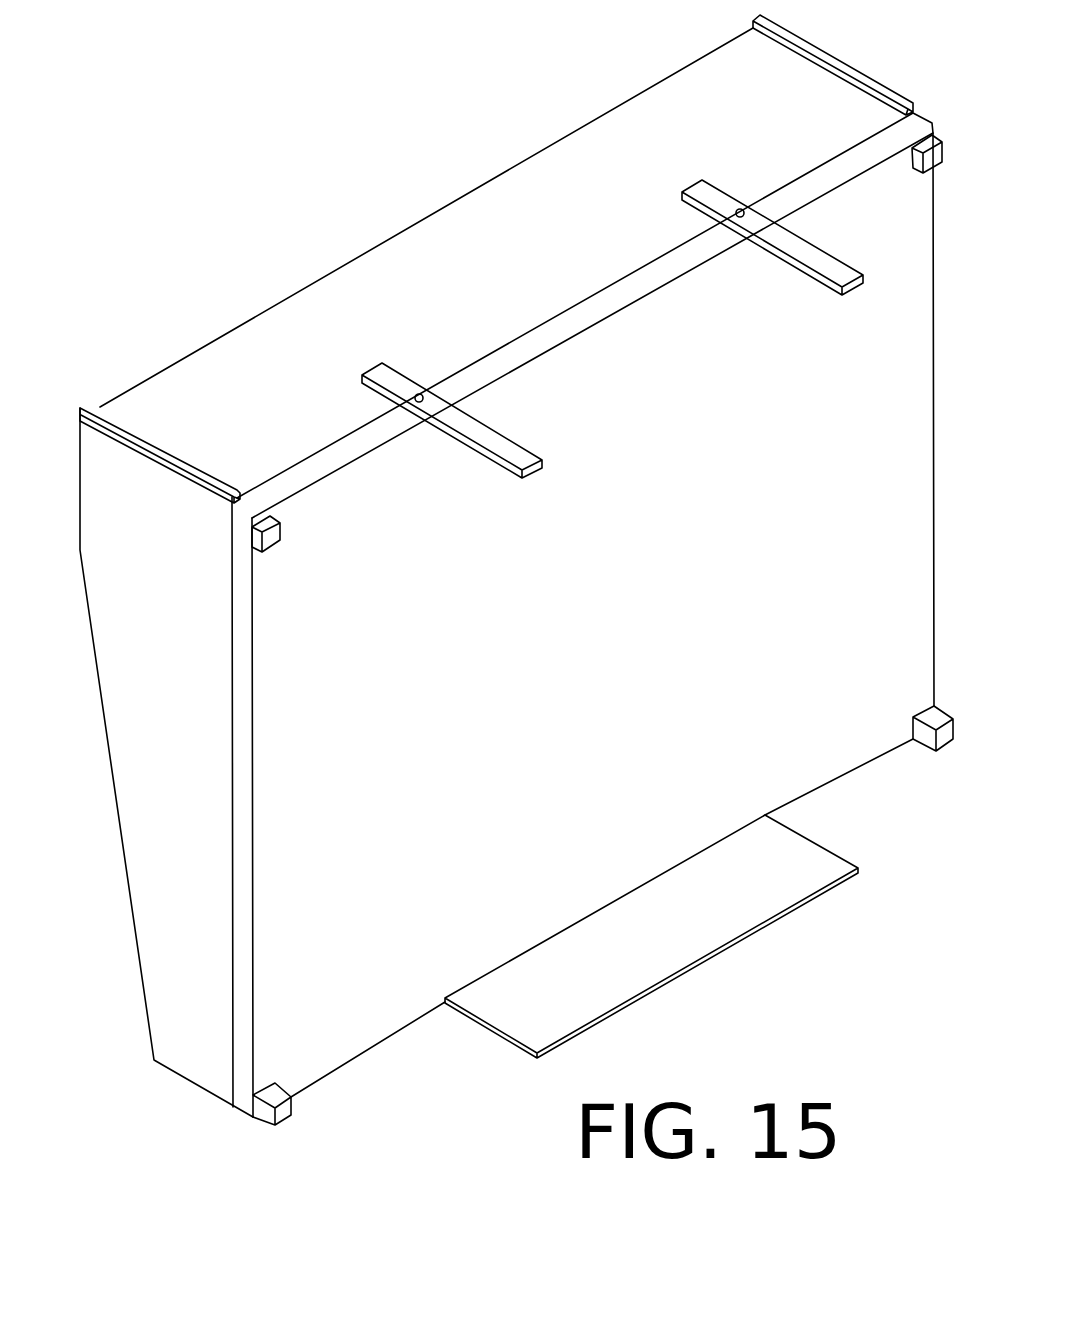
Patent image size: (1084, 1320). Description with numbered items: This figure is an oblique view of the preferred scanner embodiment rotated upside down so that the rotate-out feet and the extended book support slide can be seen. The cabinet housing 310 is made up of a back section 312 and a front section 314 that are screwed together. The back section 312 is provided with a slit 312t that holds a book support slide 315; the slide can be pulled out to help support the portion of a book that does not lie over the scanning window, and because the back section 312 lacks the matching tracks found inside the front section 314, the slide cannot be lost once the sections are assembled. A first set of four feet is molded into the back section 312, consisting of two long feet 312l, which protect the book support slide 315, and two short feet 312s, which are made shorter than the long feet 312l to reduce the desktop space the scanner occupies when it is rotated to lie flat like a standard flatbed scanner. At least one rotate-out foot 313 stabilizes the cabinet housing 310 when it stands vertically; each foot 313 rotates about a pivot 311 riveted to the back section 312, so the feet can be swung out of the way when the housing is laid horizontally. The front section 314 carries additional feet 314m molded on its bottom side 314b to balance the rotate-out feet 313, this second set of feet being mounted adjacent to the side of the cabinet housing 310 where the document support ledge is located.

The cabinet housing 310 is at (203, 293).
The pivot 311 is at (419, 394).
The back section 312 is at (368, 1050).
The short feet 312s is at (270, 545).
The long feet 312l is at (280, 1092).
The slit 312t is at (463, 988).
The rotate-out foot 313 is at (533, 473).
The front section 314 is at (183, 1080).
The bottom side 314b is at (470, 256).
The additional feet 314m is at (82, 408).
The book support slide 315 is at (697, 960).